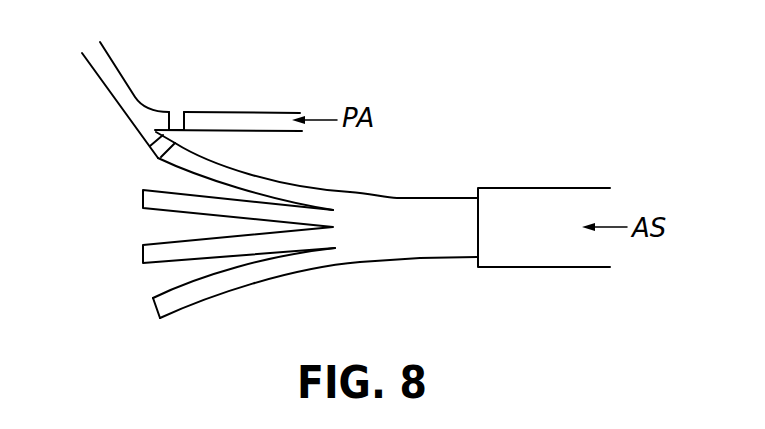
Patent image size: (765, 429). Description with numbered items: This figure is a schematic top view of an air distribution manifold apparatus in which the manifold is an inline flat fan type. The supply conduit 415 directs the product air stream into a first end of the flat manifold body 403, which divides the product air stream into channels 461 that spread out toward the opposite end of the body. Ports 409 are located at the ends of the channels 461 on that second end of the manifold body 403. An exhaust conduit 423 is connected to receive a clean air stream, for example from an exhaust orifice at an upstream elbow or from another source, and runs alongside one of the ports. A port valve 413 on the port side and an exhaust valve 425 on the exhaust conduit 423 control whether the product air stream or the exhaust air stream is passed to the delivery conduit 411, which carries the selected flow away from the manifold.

The delivery conduit 411 is at (112, 61).
The exhaust valve 425 is at (178, 111).
The exhaust conduit 423 is at (265, 112).
The port valve 413 is at (150, 147).
The port 409 is at (183, 145).
The manifold body 403 is at (392, 198).
The supply conduit 415 is at (547, 188).
The channel 461 is at (280, 268).